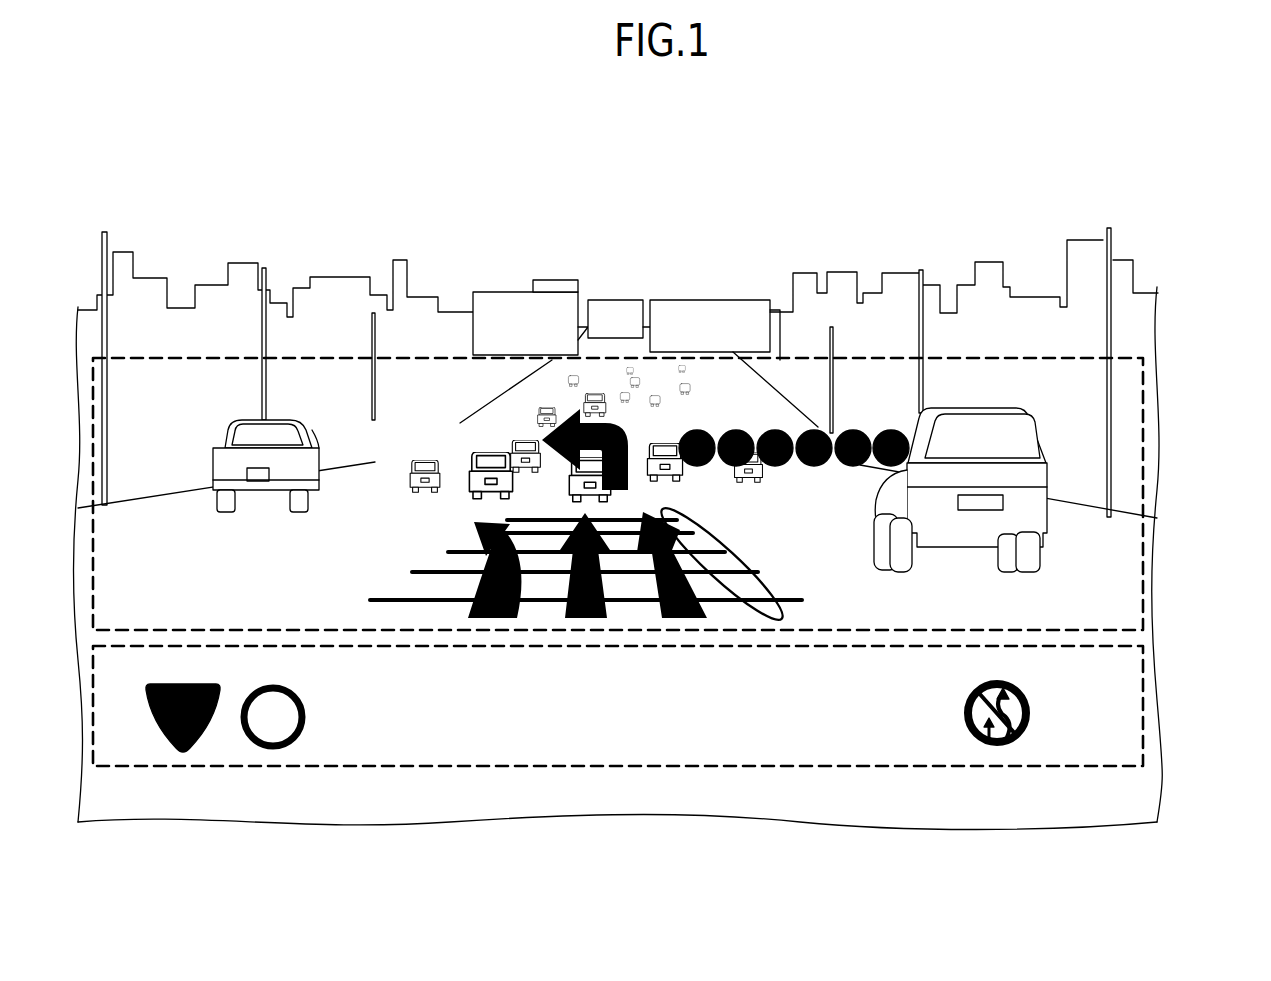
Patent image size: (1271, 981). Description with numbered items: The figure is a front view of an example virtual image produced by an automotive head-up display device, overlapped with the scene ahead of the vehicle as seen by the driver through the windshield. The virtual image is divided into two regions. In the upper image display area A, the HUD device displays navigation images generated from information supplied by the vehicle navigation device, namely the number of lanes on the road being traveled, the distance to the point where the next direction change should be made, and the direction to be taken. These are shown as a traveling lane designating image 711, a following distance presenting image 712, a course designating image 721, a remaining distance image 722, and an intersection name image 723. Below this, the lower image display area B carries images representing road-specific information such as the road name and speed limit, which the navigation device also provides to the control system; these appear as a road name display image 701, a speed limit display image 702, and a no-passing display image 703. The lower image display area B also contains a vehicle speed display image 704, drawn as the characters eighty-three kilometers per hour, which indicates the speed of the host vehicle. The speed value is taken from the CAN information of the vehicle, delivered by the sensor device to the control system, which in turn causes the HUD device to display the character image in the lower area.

The road name display image 701 is at (183, 752).
The speed limit display image 702 is at (270, 752).
The no-passing display image 703 is at (990, 758).
The vehicle speed display image 704 is at (660, 756).
The traveling lane designating image 711 is at (663, 608).
The following distance presenting image 712 is at (764, 620).
The course designating image 721 is at (605, 408).
The remaining distance image 722 is at (421, 412).
The intersection name image 723 is at (856, 411).
The upper image display area A is at (1146, 455).
The lower image display area B is at (1146, 690).